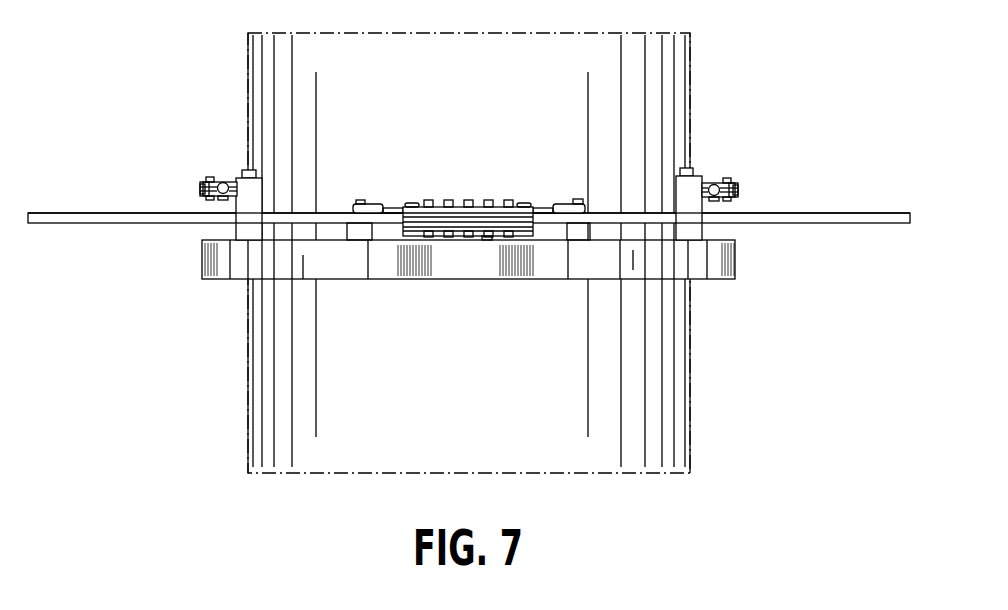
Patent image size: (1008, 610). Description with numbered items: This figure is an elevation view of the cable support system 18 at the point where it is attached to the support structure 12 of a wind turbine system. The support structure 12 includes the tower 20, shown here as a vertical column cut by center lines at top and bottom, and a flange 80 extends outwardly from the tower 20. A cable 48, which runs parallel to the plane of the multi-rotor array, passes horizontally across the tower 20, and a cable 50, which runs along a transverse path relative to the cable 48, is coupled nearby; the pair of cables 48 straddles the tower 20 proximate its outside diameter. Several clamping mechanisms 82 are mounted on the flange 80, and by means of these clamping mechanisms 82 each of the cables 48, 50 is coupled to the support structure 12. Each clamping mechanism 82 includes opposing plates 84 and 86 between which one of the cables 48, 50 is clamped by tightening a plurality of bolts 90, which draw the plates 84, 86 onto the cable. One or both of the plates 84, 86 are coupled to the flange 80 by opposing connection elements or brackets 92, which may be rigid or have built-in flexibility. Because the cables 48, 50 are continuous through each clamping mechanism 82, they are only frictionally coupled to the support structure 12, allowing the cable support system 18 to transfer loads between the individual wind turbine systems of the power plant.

The support structure 12 is at (247, 428).
The cable support system 18 is at (39, 207).
The tower 20 is at (247, 395).
The cable 48 is at (68, 213).
The cable 50 is at (237, 185).
The flange 80 is at (202, 253).
The clamping mechanism 82 is at (198, 166).
The plate 84 is at (203, 182).
The plate 86 is at (200, 192).
The bolt 90 is at (208, 200).
The connection element 92 is at (257, 178).